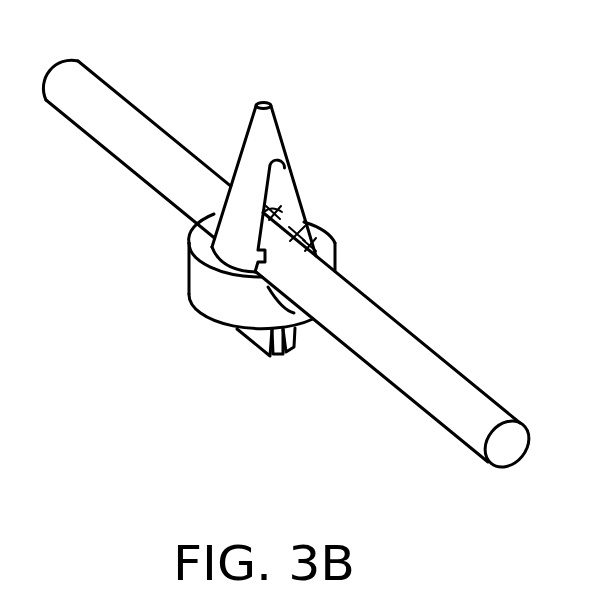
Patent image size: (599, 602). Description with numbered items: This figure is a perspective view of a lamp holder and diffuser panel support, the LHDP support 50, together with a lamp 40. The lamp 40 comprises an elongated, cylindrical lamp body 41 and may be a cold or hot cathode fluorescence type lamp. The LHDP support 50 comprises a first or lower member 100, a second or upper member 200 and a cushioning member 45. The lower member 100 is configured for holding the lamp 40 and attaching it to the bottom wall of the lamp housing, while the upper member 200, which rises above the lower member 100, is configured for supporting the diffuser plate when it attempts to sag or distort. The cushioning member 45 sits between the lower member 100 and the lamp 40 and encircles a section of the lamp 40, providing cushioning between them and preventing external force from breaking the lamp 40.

The lamp 40 is at (408, 327).
The lamp body 41 is at (450, 393).
The cushioning member 45 is at (308, 218).
The LHDP support 50 is at (218, 211).
The lower member 100 is at (220, 307).
The upper member 200 is at (279, 127).